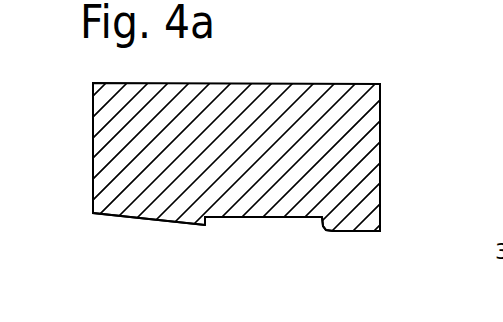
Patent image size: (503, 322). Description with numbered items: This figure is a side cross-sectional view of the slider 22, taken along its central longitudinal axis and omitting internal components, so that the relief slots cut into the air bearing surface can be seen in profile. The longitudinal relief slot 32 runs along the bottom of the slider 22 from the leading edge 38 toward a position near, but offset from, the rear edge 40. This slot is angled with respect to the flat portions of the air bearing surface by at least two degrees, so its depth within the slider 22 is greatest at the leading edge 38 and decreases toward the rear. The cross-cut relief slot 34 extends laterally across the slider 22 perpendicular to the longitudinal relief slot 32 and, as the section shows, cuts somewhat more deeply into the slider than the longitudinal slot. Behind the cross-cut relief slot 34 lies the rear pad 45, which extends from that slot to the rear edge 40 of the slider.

The slider 22 is at (303, 62).
The leading edge 38 is at (93, 213).
The longitudinal relief slot 32 is at (148, 220).
The cross-cut relief slot 34 is at (250, 217).
The rear pad 45 is at (350, 232).
The rear edge 40 is at (378, 230).